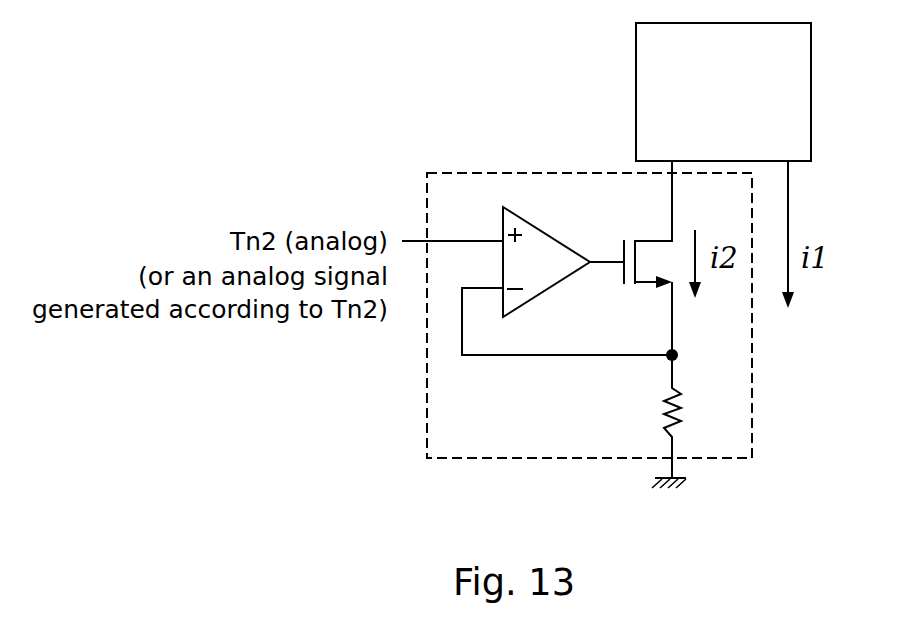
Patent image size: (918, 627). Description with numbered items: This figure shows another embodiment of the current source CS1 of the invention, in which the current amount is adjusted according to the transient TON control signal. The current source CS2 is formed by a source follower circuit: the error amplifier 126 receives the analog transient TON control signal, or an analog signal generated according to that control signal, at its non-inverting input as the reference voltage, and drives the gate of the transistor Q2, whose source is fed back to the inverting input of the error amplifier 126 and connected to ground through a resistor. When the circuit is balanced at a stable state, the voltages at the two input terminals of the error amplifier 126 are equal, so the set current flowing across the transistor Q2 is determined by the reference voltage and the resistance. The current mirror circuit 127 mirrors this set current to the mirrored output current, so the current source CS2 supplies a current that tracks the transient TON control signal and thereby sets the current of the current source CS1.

The current mirror circuit 127 is at (705, 148).
The error amplifier 126 is at (553, 285).
The transistor Q2 is at (648, 258).
The current source CS2 is at (517, 445).
The current source CS1 is at (877, 502).